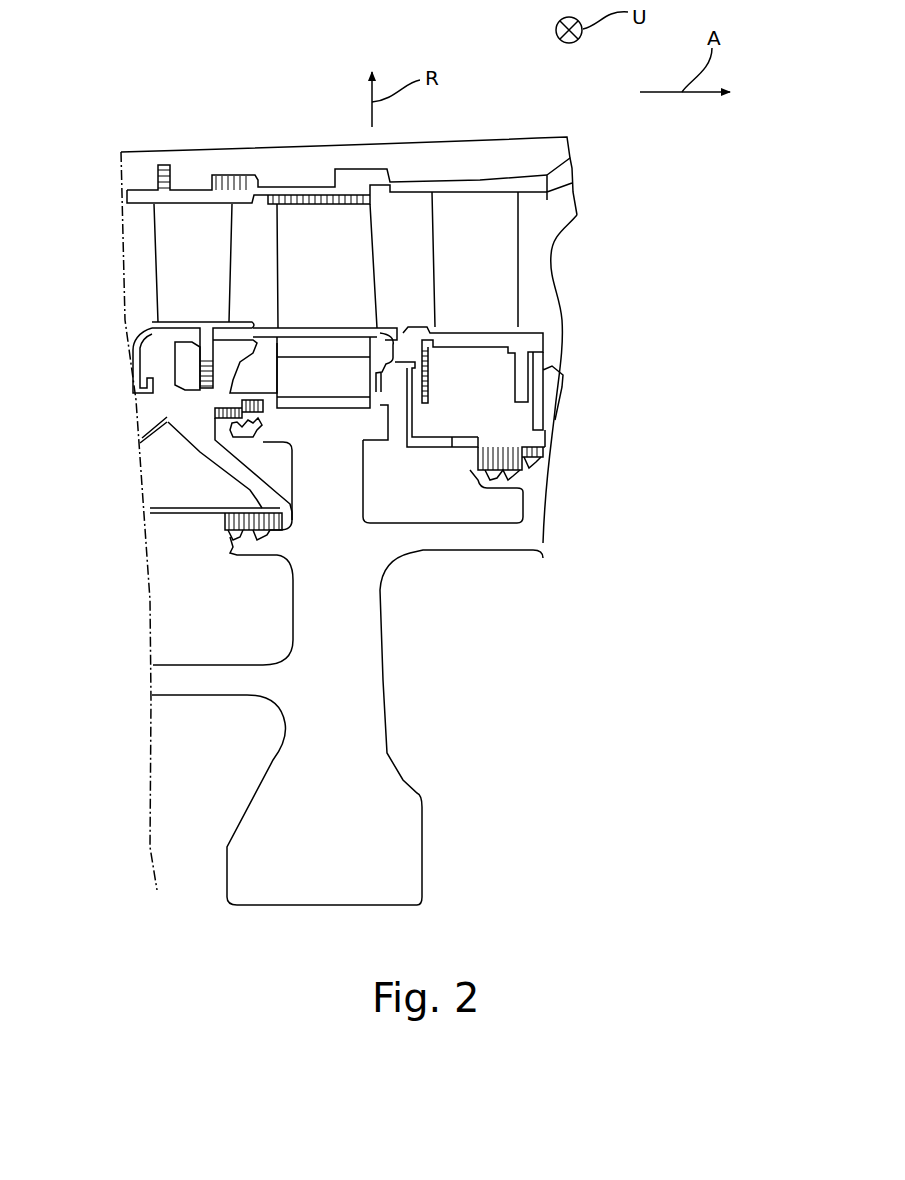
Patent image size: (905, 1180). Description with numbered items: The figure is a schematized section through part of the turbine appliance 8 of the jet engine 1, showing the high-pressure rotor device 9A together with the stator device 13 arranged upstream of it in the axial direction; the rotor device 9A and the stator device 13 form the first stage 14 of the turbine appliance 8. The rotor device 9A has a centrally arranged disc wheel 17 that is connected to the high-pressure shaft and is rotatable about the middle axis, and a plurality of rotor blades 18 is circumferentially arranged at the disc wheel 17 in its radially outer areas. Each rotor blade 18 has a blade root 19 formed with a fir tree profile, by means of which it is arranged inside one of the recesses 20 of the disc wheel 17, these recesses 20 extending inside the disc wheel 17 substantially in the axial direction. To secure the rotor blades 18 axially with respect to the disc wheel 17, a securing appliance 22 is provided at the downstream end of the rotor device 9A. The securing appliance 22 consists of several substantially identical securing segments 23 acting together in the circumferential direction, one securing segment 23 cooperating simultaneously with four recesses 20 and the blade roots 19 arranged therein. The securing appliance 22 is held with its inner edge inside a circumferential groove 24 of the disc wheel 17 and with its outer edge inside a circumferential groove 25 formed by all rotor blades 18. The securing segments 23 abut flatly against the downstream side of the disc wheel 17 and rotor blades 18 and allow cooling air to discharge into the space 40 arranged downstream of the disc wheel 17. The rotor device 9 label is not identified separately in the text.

The jet engine 1 is at (110, 110).
The high-pressure rotor device 9A is at (252, 136).
The rotor blade 18 is at (322, 240).
The circumferential groove 25 is at (381, 332).
The stator device 13 is at (524, 248).
The securing appliance 22 is at (390, 371).
The space 40 is at (388, 386).
The securing segment 23 is at (360, 410).
The circumferential groove 24 is at (377, 415).
The blade root 19 is at (305, 380).
The recess 20 is at (282, 400).
The first stage 14 is at (243, 606).
The turbine appliance 8 is at (150, 684).
The rotor disc 9 is at (226, 889).
The disc wheel 17 is at (326, 883).